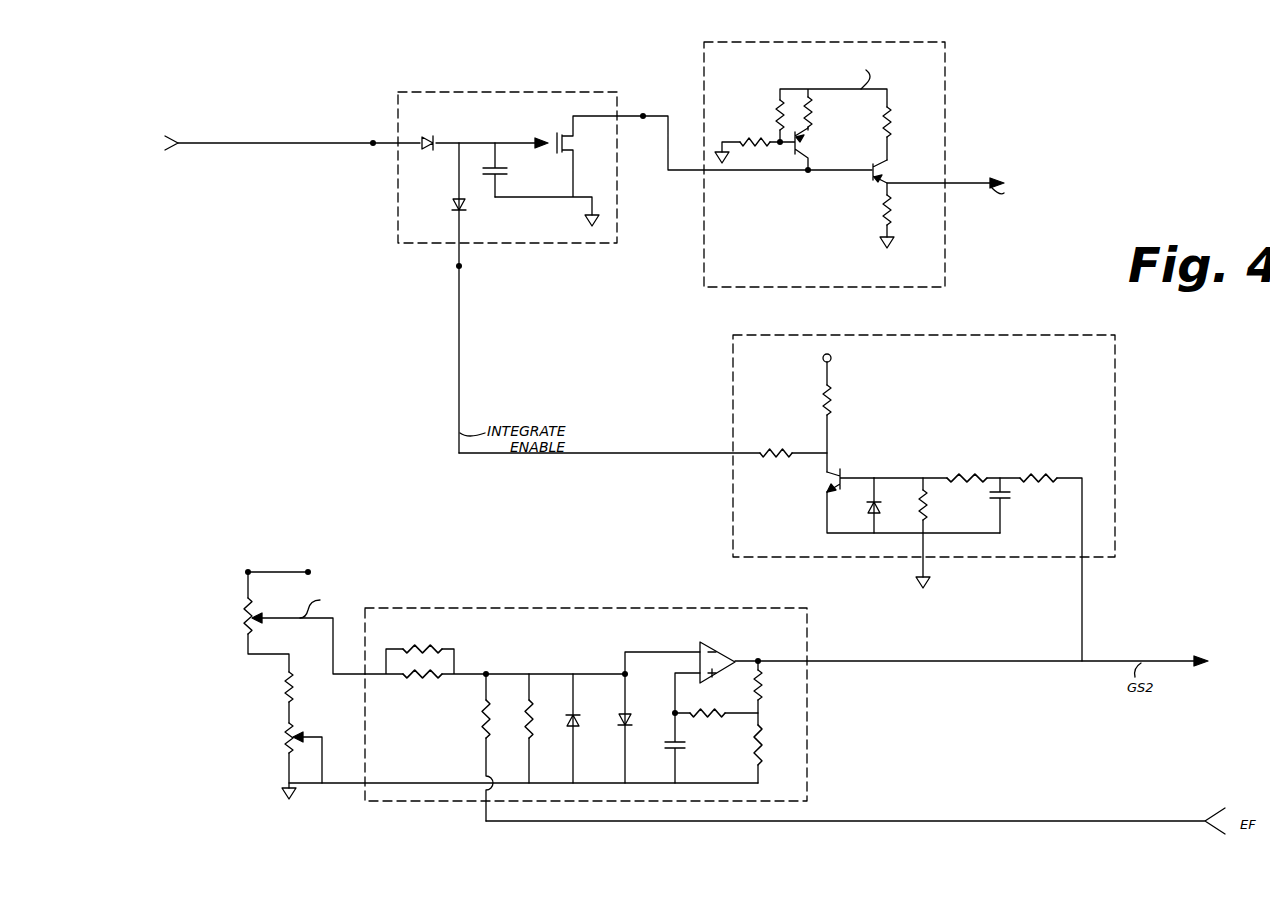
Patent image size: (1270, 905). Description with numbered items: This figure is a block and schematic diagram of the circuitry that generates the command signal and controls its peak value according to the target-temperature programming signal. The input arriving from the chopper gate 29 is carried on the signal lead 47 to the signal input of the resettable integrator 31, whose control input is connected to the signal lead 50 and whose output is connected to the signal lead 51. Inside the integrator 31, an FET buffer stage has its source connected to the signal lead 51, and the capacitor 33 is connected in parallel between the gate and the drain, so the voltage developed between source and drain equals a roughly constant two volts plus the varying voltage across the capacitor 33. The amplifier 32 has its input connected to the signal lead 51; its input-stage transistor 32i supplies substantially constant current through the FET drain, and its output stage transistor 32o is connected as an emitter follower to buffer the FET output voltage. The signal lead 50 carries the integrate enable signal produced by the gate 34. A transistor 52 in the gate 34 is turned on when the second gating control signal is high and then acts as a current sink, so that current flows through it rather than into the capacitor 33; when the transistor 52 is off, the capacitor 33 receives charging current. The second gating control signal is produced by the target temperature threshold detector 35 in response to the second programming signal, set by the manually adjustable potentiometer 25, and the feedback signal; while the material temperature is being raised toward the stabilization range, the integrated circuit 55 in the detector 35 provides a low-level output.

The chopper gate 29 is at (256, 155).
The signal lead 47 is at (372, 146).
The resettable integrator 31 is at (414, 115).
The capacitor 33 is at (507, 177).
The signal lead 50 is at (462, 266).
The signal lead 51 is at (657, 102).
The amplifier 32 is at (763, 47).
The input-stage transistor 32i is at (803, 136).
The output stage transistor 32o is at (880, 167).
The gate 34 is at (924, 498).
The transistor 52 is at (842, 471).
The potentiometer 25 is at (246, 633).
The target temperature threshold detector 35 is at (548, 714).
The integrated circuit 55 is at (722, 651).